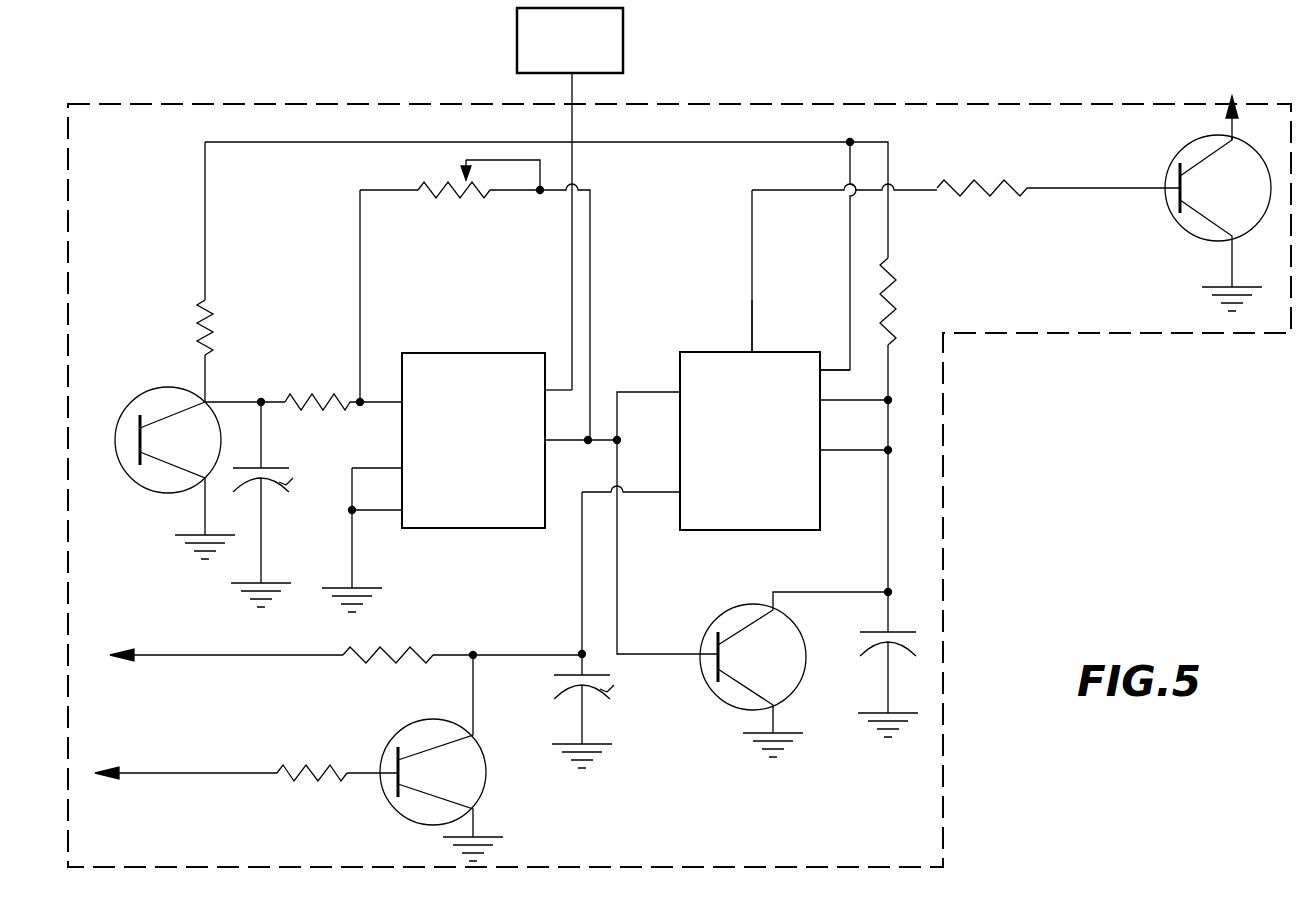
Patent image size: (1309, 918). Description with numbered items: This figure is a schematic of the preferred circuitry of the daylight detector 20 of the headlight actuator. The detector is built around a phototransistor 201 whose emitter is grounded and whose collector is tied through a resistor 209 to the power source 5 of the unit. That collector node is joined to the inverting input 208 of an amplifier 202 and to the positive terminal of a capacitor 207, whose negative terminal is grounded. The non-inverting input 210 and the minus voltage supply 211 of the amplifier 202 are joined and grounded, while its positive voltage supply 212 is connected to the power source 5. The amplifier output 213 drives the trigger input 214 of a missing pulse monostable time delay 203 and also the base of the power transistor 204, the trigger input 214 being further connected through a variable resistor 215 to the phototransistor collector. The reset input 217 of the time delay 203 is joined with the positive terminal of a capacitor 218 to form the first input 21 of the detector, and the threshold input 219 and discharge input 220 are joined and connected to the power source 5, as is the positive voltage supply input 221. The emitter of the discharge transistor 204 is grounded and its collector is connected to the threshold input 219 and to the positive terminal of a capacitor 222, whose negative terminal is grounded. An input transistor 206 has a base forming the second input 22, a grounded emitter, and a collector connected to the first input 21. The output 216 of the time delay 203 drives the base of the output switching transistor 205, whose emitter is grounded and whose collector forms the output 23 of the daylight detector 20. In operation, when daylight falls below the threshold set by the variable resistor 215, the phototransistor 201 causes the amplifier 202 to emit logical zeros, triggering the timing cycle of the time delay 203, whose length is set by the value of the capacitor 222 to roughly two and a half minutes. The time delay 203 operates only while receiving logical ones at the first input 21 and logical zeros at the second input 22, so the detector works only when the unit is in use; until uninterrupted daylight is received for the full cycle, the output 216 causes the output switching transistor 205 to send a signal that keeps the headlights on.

The power source 5 is at (580, 53).
The daylight detector 20 is at (943, 429).
The first input 21 is at (163, 652).
The second input 22 is at (148, 772).
The output 23 is at (1228, 124).
The phototransistor 201 is at (164, 395).
The amplifier 202 is at (480, 342).
The missing pulse monostable time delay 203 is at (748, 352).
The power transistor 204 is at (727, 614).
The output switching transistor 205 is at (1170, 214).
The input transistor 206 is at (396, 814).
The capacitor 207 is at (275, 504).
The inverting input 208 is at (394, 406).
The resistor 209 is at (214, 331).
The non-inverting input 210 is at (377, 489).
The minus voltage supply 211 is at (396, 516).
The positive voltage supply 212 is at (546, 390).
The output 213 is at (546, 440).
The trigger input 214 is at (678, 390).
The variable resistor 215 is at (475, 300).
The output 216 is at (754, 350).
The reset input 217 is at (680, 500).
The capacitor 218 is at (612, 690).
The threshold input 219 is at (826, 456).
The discharge input 220 is at (824, 404).
The positive voltage supply input 221 is at (826, 368).
The capacitor 222 is at (868, 634).